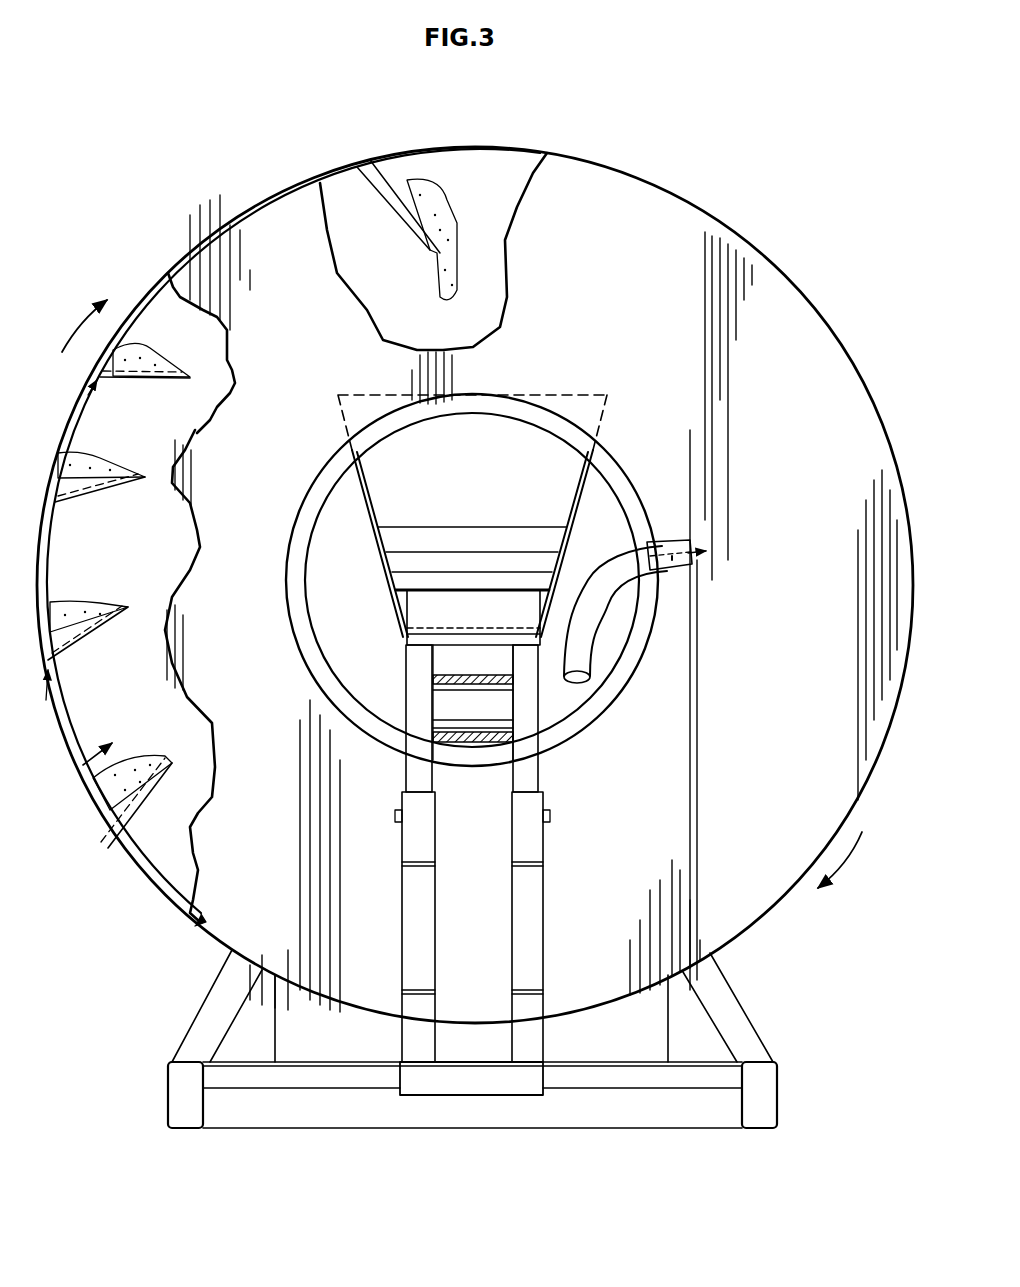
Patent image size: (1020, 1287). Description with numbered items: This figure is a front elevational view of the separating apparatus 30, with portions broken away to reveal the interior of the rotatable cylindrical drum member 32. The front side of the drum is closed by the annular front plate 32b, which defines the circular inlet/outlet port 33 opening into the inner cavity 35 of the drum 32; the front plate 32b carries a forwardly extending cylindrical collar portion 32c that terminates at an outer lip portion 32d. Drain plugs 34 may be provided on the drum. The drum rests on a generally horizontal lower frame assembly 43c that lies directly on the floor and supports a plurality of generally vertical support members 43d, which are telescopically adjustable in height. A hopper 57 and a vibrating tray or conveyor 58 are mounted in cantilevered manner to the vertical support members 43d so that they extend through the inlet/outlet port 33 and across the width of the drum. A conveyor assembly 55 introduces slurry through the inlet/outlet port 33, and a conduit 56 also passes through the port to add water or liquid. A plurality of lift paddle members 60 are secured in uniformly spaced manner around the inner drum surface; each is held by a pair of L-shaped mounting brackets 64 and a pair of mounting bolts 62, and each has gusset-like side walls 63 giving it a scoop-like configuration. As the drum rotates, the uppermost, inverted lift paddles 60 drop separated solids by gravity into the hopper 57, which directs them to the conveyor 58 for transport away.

The separating apparatus 30 is at (703, 130).
The rotatable cylindrical drum member 32 is at (343, 170).
The annular front plate 32b is at (753, 330).
The cylindrical collar portion 32c is at (312, 546).
The outer lip portion 32d is at (343, 697).
The inlet/outlet port 33 is at (330, 600).
The drain plugs 34 is at (205, 926).
The inner cavity 35 is at (83, 766).
The lower frame assembly 43c is at (168, 1090).
The vertical support members 43d is at (412, 893).
The conveyor assembly 55 is at (518, 690).
The conduit 56 is at (604, 573).
The hopper 57 is at (500, 450).
The vibrating tray or conveyor 58 is at (432, 608).
The lift paddle members 60 is at (392, 208).
The mounting bolts 62 is at (106, 378).
The side walls 63 is at (140, 797).
The mounting brackets 64 is at (90, 396).